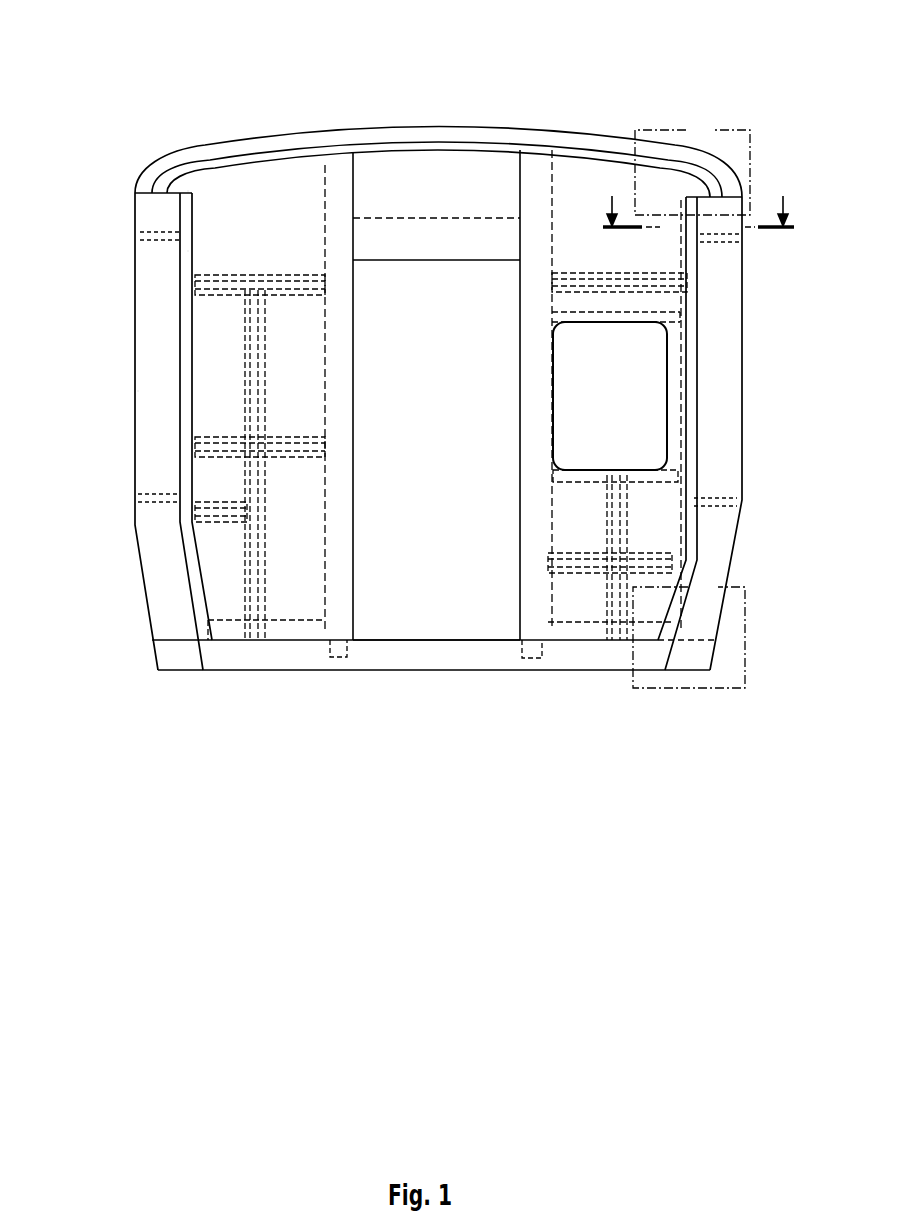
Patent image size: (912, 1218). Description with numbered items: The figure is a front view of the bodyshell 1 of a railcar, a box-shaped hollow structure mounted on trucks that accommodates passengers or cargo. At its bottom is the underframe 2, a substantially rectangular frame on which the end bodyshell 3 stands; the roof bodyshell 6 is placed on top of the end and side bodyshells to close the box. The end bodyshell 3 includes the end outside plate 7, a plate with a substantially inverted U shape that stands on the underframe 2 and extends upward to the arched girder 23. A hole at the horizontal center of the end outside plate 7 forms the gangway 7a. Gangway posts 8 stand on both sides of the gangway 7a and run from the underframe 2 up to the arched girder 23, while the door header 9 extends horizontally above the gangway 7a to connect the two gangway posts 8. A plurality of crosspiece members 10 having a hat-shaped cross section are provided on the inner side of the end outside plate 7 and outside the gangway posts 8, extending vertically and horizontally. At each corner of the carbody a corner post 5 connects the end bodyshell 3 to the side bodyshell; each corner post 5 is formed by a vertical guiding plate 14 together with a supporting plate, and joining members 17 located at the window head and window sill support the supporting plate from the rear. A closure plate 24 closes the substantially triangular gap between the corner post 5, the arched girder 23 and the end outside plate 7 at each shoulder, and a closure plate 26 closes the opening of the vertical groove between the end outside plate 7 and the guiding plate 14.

The bodyshell 1 is at (683, 105).
The underframe 2 is at (580, 667).
The end bodyshell 3 is at (473, 146).
The corner post 5 is at (128, 312).
The roof bodyshell 6 is at (406, 122).
The end outside plate 7 is at (503, 163).
The gangway 7a is at (430, 632).
The gangway post 8 is at (343, 165).
The door header 9 is at (433, 243).
The crosspiece member 10 is at (283, 292).
The guiding plate 14 is at (138, 387).
The joining member 17 is at (140, 228).
The arched girder 23 is at (270, 145).
The closure plate 24 is at (190, 186).
The closure plate 26 is at (190, 250).